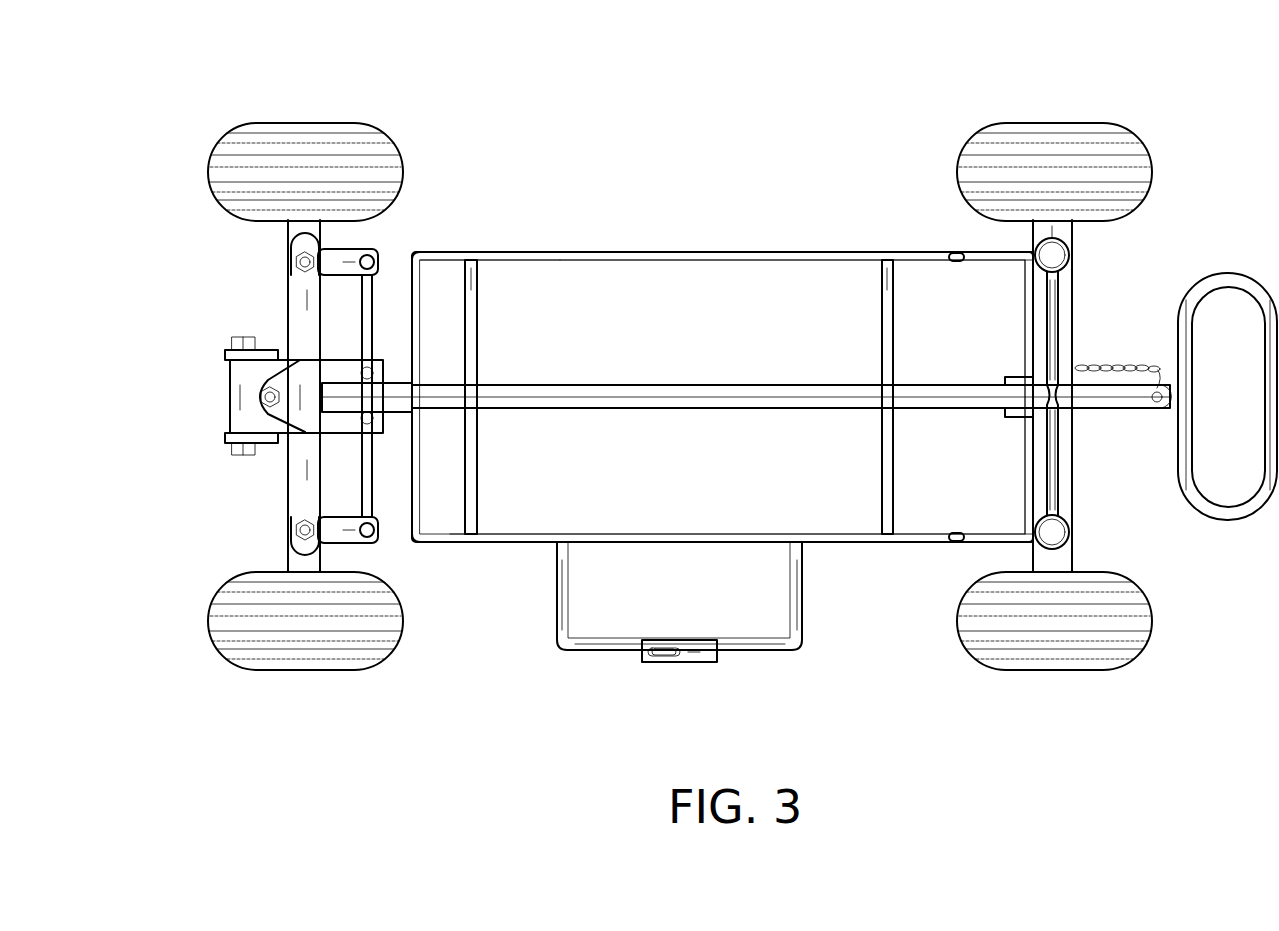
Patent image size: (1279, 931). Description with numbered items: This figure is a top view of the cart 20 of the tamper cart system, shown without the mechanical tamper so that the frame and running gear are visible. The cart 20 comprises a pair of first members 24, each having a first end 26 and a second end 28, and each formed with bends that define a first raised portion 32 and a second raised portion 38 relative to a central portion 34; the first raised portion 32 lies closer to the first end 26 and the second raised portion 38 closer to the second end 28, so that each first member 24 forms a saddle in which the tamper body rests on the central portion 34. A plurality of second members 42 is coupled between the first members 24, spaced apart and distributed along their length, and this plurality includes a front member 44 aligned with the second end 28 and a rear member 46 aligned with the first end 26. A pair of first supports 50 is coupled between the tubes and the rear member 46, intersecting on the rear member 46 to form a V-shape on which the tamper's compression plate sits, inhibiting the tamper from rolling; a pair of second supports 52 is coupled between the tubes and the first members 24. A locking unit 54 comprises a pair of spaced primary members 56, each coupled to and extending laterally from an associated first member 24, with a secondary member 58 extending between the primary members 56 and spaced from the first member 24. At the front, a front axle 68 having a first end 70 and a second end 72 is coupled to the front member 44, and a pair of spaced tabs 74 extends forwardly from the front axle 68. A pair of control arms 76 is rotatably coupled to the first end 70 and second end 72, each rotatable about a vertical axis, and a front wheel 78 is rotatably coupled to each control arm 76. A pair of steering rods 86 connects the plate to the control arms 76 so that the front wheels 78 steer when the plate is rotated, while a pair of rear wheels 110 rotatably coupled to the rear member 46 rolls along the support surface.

The cart 20 is at (709, 178).
The first members 24 is at (836, 252).
The first end 26 is at (1068, 258).
The second end 28 is at (412, 252).
The first raised portion 32 is at (1000, 255).
The central portion 34 is at (607, 545).
The second raised portion 38 is at (452, 252).
The second members 42 is at (478, 330).
The front member 44 is at (398, 542).
The rear member 46 is at (1072, 478).
The first supports 50 is at (1053, 457).
The second supports 52 is at (962, 252).
The locking unit 54 is at (708, 680).
The primary members 56 is at (558, 585).
The secondary member 58 is at (613, 650).
The front axle 68 is at (290, 291).
The first end 70 is at (303, 555).
The second end 72 is at (305, 233).
The tabs 74 is at (260, 392).
The control arms 76 is at (367, 256).
The front wheels 78 is at (232, 124).
The steering rods 86 is at (363, 322).
The rear wheels 110 is at (1147, 150).